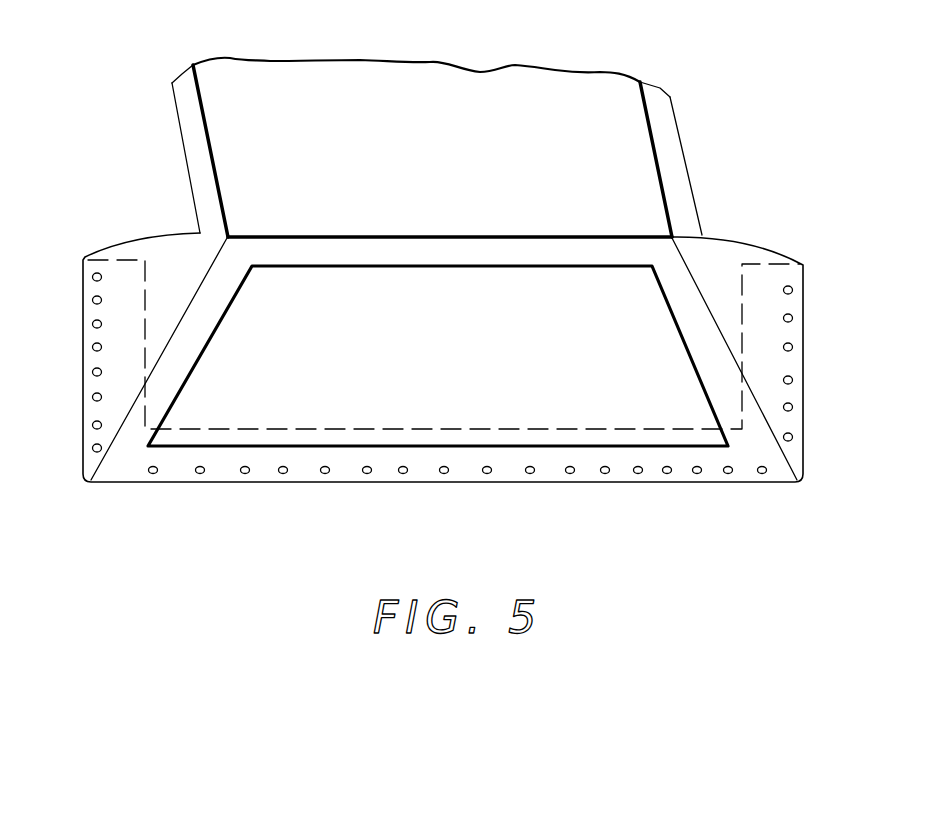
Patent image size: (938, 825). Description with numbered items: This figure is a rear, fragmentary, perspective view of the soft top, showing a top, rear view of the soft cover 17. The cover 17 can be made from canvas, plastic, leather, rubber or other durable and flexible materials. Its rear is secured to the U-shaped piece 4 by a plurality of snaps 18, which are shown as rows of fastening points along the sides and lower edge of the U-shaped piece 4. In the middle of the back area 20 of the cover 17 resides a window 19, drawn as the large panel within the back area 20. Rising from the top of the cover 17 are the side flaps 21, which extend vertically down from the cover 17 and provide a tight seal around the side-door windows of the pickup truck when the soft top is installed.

The U-shaped piece 4 is at (127, 345).
The soft cover 17 is at (725, 270).
The snaps 18 is at (790, 378).
The window 19 is at (625, 382).
The back area 20 is at (223, 282).
The side flaps 21 is at (188, 138).